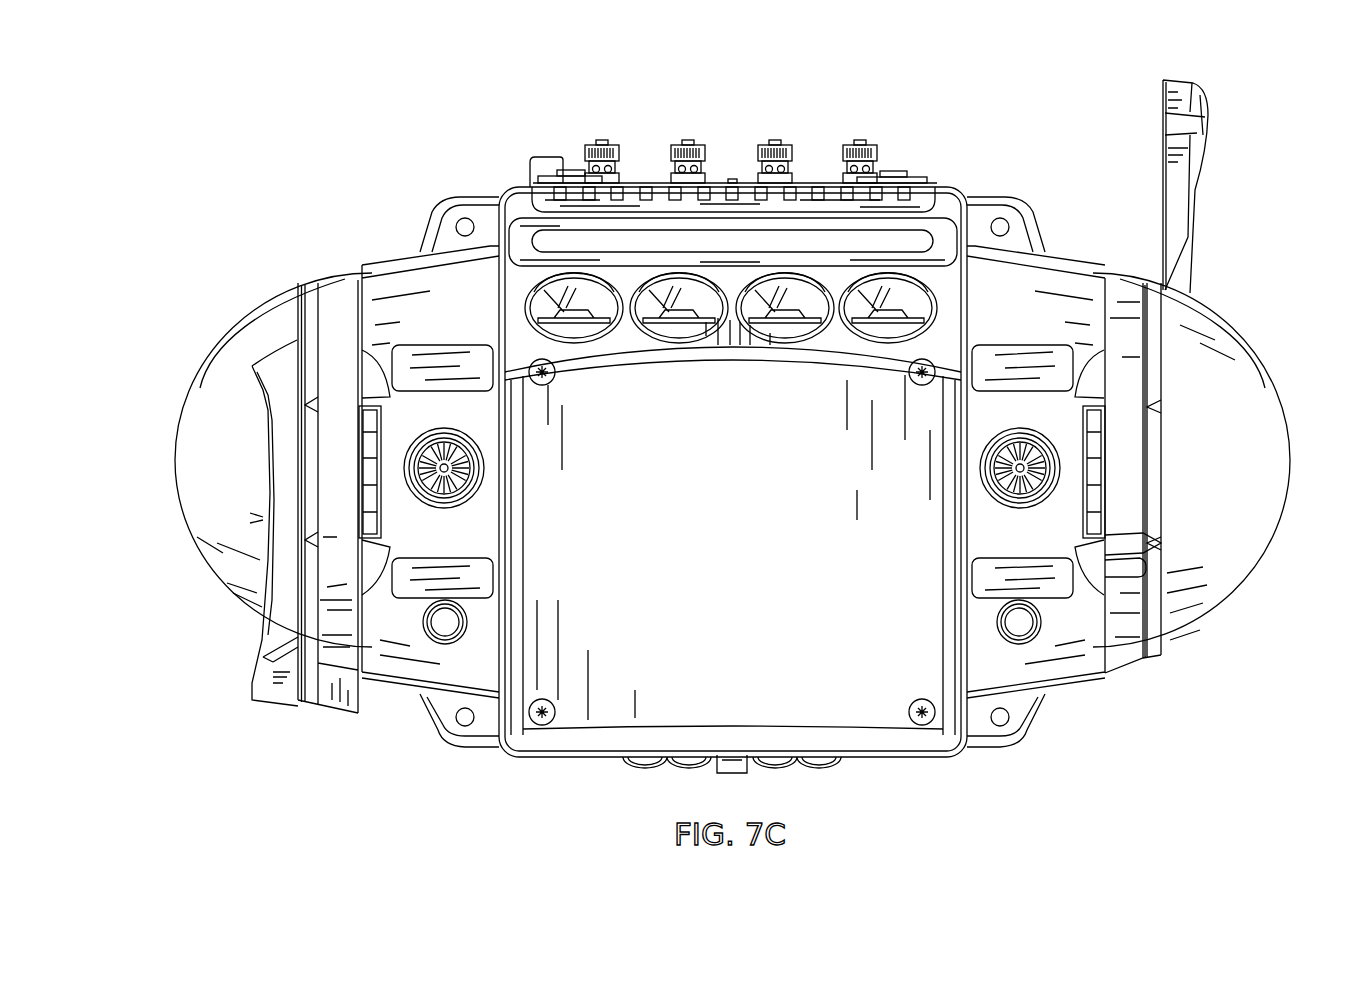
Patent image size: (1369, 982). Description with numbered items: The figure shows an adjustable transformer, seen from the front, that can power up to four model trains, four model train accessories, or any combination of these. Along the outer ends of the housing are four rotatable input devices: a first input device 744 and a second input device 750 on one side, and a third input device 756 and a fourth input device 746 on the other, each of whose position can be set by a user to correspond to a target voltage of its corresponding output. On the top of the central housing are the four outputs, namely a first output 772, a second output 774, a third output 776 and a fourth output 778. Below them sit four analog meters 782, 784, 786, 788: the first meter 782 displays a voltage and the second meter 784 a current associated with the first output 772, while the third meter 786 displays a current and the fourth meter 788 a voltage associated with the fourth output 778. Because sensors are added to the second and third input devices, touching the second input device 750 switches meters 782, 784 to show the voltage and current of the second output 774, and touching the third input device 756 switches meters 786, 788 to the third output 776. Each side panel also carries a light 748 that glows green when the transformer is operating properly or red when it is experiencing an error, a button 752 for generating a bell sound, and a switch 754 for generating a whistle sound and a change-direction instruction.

The first input device 744 is at (276, 708).
The fourth input device 746 is at (1208, 117).
The light 748 is at (427, 433).
The second input device 750 is at (340, 710).
The button 752 is at (445, 628).
The switch 754 is at (372, 470).
The third input device 756 is at (1123, 568).
The first output 772 is at (604, 140).
The second output 774 is at (690, 140).
The third output 776 is at (777, 140).
The fourth output 778 is at (862, 140).
The analog meter 782 is at (606, 340).
The analog meter 784 is at (680, 340).
The analog meter 786 is at (768, 340).
The analog meter 788 is at (865, 340).